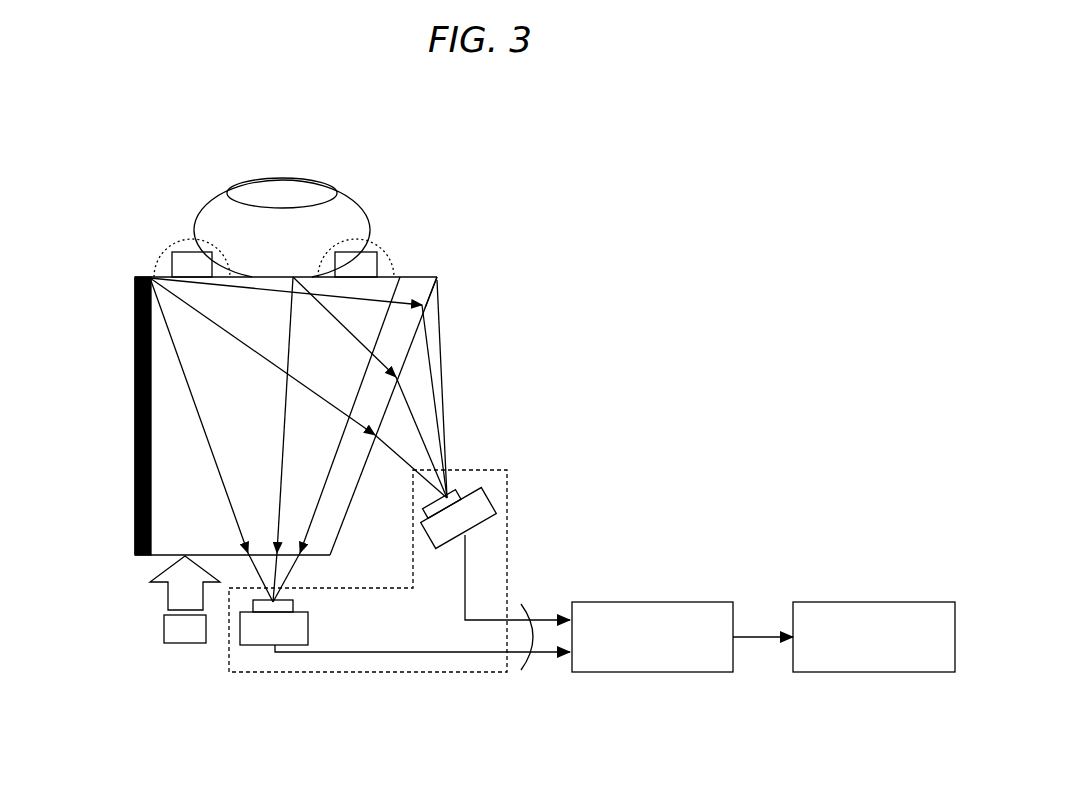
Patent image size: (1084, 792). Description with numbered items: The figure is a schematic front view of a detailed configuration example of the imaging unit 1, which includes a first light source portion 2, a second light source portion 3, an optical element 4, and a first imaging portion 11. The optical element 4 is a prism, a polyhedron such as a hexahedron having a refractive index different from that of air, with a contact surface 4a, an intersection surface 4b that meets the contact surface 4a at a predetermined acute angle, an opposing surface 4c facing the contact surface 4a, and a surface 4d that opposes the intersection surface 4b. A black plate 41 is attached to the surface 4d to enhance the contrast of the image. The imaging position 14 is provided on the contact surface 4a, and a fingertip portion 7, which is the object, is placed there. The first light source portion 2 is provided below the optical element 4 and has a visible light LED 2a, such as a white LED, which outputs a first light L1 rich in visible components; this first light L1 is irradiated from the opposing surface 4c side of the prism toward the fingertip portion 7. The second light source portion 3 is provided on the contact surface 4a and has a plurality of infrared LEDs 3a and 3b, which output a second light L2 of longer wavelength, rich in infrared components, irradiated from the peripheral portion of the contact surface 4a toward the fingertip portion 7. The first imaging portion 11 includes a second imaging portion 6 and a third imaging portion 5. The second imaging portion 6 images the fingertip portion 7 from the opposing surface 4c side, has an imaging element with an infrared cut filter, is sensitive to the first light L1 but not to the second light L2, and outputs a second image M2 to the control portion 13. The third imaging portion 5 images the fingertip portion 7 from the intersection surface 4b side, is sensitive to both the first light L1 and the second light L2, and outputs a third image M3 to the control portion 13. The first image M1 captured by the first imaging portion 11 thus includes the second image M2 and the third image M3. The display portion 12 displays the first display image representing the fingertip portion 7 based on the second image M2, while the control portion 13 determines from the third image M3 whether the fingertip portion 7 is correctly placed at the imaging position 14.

The imaging unit 1 is at (568, 322).
The first light source portion 2 is at (102, 707).
The visible light LED 2a is at (168, 645).
The second light source portion 3 is at (118, 274).
The infrared LED 3a is at (192, 262).
The infrared LED 3b is at (357, 262).
The optical element 4 is at (439, 302).
The contact surface 4a is at (417, 274).
The intersection surface 4b is at (350, 515).
The opposing surface 4c is at (307, 557).
The surface 4d is at (137, 457).
The third imaging portion 5 is at (492, 501).
The second imaging portion 6 is at (310, 628).
The fingertip portion 7 is at (288, 171).
The first imaging portion 11 is at (510, 477).
The display portion 12 is at (900, 602).
The control portion 13 is at (678, 602).
The imaging position 14 is at (157, 217).
The black plate 41 is at (137, 401).
The first light L1 is at (168, 590).
The second light L2 is at (192, 237).
The first image M1 is at (534, 674).
The second image M2 is at (355, 663).
The third image M3 is at (474, 572).